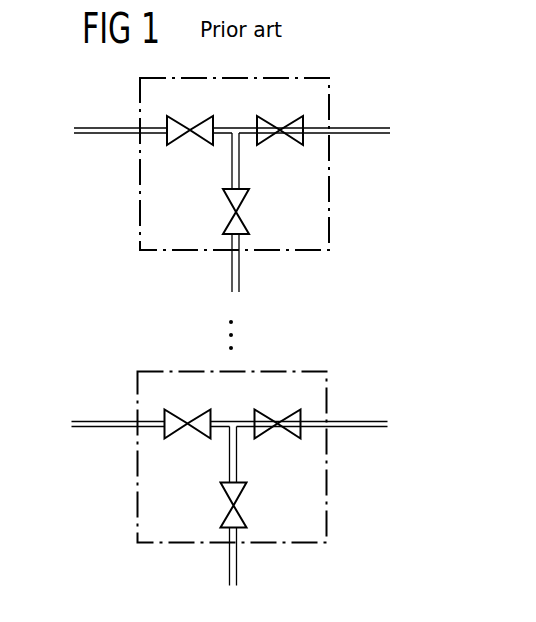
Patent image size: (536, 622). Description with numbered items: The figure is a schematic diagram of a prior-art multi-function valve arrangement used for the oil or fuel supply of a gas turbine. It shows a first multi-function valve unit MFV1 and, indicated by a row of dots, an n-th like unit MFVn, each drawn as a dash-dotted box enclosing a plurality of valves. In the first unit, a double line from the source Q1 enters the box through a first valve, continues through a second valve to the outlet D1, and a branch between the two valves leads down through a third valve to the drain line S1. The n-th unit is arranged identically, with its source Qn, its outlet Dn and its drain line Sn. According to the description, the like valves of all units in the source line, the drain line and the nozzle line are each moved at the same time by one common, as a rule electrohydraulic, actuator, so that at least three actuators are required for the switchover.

The source Q1 is at (143, 119).
The delivery connection of first mass flow valve unit D1 is at (301, 119).
The drain line S1 is at (224, 213).
The multi-function valve MFV1 is at (330, 173).
The source Qn is at (141, 413).
The delivery connection of n-th mass flow valve unit Dn is at (299, 413).
The drain line Sn is at (222, 507).
The multi-function valve MFVn is at (282, 457).